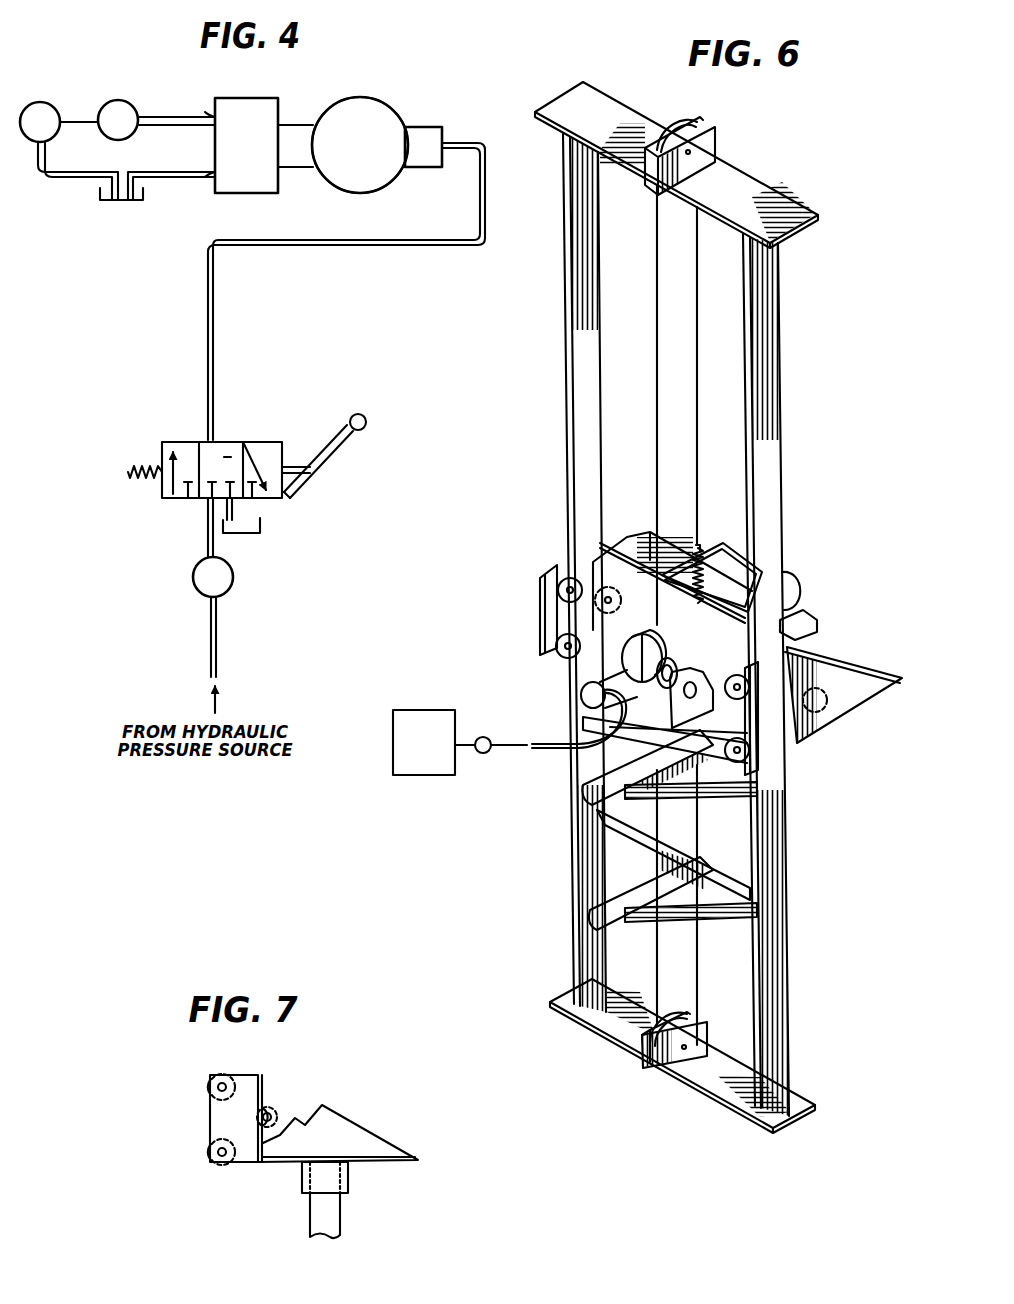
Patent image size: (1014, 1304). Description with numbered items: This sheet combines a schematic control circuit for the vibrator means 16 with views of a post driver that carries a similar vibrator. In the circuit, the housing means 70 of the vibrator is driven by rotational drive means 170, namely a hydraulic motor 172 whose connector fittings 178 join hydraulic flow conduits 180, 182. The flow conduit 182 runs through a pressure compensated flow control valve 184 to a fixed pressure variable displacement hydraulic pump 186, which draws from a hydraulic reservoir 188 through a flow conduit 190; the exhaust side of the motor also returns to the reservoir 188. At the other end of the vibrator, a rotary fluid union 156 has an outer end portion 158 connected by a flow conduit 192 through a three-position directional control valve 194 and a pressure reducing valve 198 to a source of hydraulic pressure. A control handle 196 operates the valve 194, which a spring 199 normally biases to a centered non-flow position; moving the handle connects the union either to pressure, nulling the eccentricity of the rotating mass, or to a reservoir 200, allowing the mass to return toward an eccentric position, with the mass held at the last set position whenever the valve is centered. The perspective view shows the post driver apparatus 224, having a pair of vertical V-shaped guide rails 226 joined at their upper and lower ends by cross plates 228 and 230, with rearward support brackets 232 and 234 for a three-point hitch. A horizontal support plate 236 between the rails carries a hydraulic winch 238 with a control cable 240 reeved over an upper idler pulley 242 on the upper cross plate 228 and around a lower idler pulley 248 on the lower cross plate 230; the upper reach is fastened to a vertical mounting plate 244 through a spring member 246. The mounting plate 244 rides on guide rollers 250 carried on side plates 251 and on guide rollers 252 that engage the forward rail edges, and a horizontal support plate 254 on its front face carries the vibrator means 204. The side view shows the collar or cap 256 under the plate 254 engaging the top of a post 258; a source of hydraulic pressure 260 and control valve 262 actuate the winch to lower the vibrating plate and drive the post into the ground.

In FIG. 4, the vibrator means 16 is at (382, 82).
In FIG. 4, the housing means 70 is at (372, 196).
In FIG. 4, the rotary fluid coupling or union 156 is at (427, 123).
In FIG. 4, the outer end portion 158 is at (447, 142).
In FIG. 4, the rotational drive means 170 is at (239, 200).
In FIG. 4, the hydraulic motor 172 is at (247, 105).
In FIG. 4, the connector fittings 178 is at (208, 112).
In FIG. 4, the hydraulic flow conduit 180 is at (177, 117).
In FIG. 4, the flow conduit 182 is at (167, 176).
In FIG. 4, the pressure compensated flow control valve 184 is at (120, 107).
In FIG. 4, the fixed pressure variable displacement hydraulic pump 186 is at (46, 110).
In FIG. 4, the hydraulic reservoir 188 is at (102, 202).
In FIG. 4, the flow conduit 190 is at (61, 178).
In FIG. 4, the flow conduit 192 is at (362, 247).
In FIG. 4, the three-position directional control valve 194 is at (261, 422).
In FIG. 4, the control handle 196 is at (338, 452).
In FIG. 4, the pressure reducing valve 198 is at (226, 583).
In FIG. 4, the spring 199 is at (134, 463).
In FIG. 4, the reservoir 200 is at (262, 530).
In FIG. 6, the vibrator means 204 is at (815, 588).
In FIG. 6, the apparatus 224 is at (842, 300).
In FIG. 6, the V-shaped guide rails 226 is at (598, 382).
In FIG. 6, the upper cross plate 228 is at (738, 187).
In FIG. 6, the lower cross plate 230 is at (718, 1085).
In FIG. 6, the support bracket 232 is at (592, 924).
In FIG. 6, the support bracket 234 is at (578, 790).
In FIG. 6, the support plate 236 is at (592, 668).
In FIG. 6, the hydraulic winch 238 is at (662, 655).
In FIG. 6, the control cable 240 is at (660, 410).
In FIG. 6, the upper idler pulley 242 is at (684, 127).
In FIG. 6, the mounting plate 244 is at (800, 660).
In FIG. 6, the spring member 246 is at (700, 548).
In FIG. 6, the lower idler pulley 248 is at (660, 1067).
In FIG. 6, the guide rollers 250 is at (558, 642).
In FIG. 7, the guide rollers 250 is at (210, 1087).
In FIG. 6, the side plates 251 is at (541, 580).
In FIG. 7, the side plates 251 is at (247, 1080).
In FIG. 6, the guide rollers 252 is at (615, 588).
In FIG. 7, the guide rollers 252 is at (274, 1112).
In FIG. 6, the support plate 254 is at (826, 643).
In FIG. 7, the support plate 254 is at (277, 1163).
In FIG. 7, the post receiving collar or cap 256 is at (348, 1180).
In FIG. 7, the post 258 is at (340, 1225).
In FIG. 6, the source of hydraulic pressure 260 is at (456, 709).
In FIG. 6, the control valve 262 is at (483, 755).